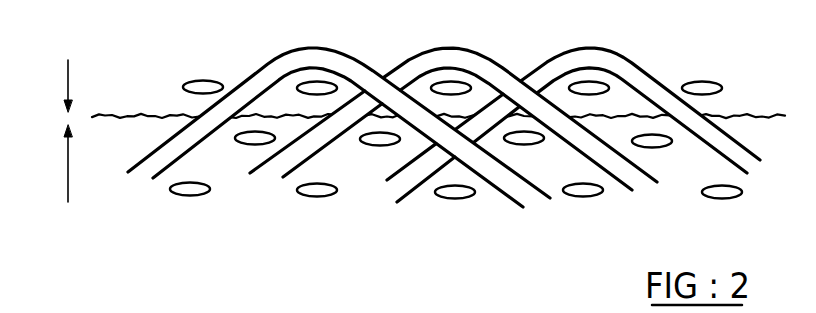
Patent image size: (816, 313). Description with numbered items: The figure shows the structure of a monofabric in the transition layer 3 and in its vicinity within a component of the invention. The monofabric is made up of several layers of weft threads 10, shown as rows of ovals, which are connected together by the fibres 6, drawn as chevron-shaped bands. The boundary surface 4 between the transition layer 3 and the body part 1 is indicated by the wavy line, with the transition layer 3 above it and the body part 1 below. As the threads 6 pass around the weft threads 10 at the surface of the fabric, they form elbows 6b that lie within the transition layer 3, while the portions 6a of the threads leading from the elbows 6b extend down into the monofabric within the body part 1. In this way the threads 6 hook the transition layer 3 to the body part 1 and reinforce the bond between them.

The body part 1 is at (55, 163).
The transition layer 3 is at (58, 84).
The boundary surface 4 is at (777, 117).
The fibres (threads) 6 is at (213, 141).
The portions of the threads 6a is at (172, 154).
The elbows 6b is at (316, 58).
The weft threads 10 is at (194, 86).